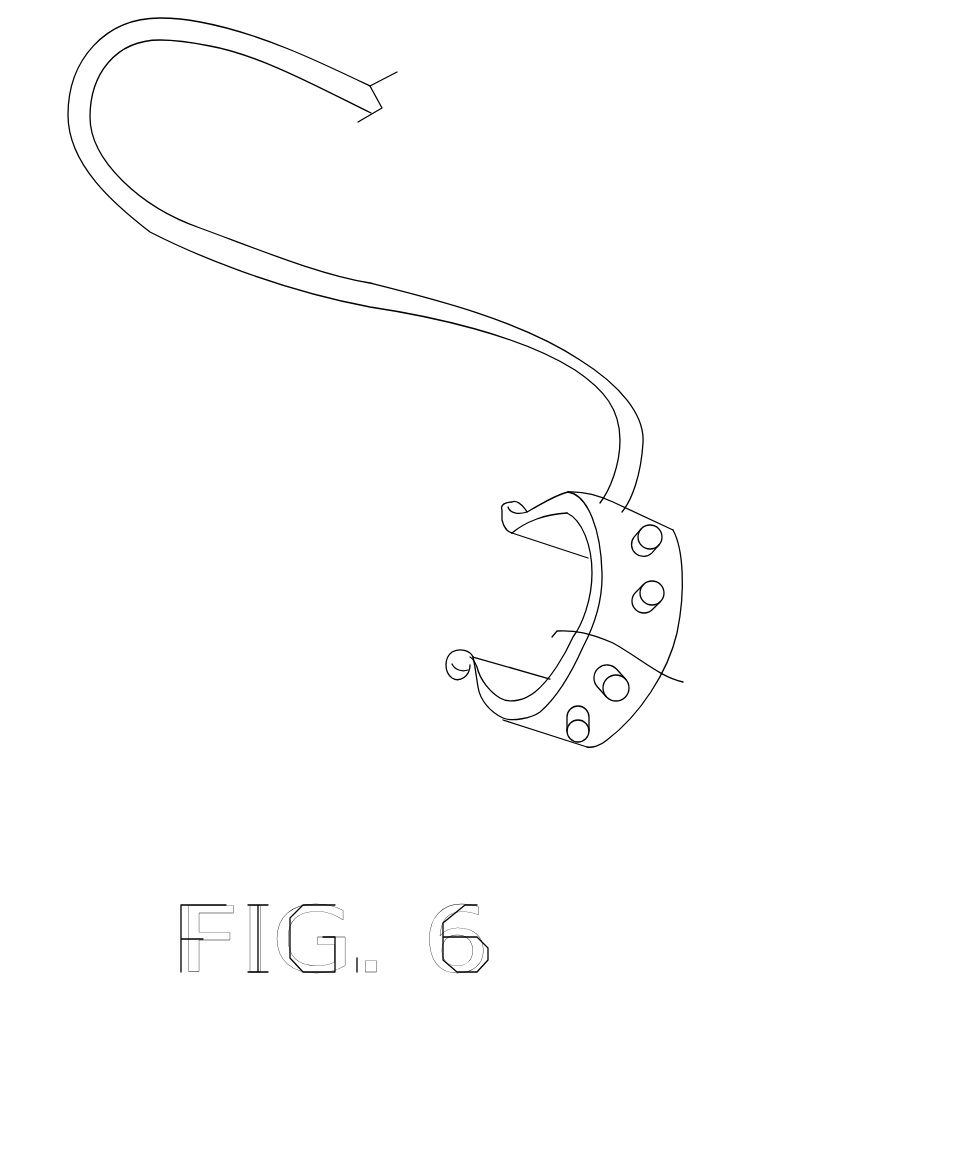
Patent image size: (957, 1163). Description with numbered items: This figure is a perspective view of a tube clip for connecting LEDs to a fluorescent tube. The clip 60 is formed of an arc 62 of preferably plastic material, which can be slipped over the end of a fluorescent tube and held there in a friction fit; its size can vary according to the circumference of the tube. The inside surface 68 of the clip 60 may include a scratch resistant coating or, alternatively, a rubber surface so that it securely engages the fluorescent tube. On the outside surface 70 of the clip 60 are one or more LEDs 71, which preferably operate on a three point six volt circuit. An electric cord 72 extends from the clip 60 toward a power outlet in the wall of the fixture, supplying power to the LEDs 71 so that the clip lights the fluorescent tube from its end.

The clip 60 is at (472, 697).
The arc 62 is at (590, 615).
The inside surface 68 is at (683, 682).
The outside surface 70 is at (652, 628).
The LEDs 71 is at (663, 593).
The electric cord 72 is at (150, 232).